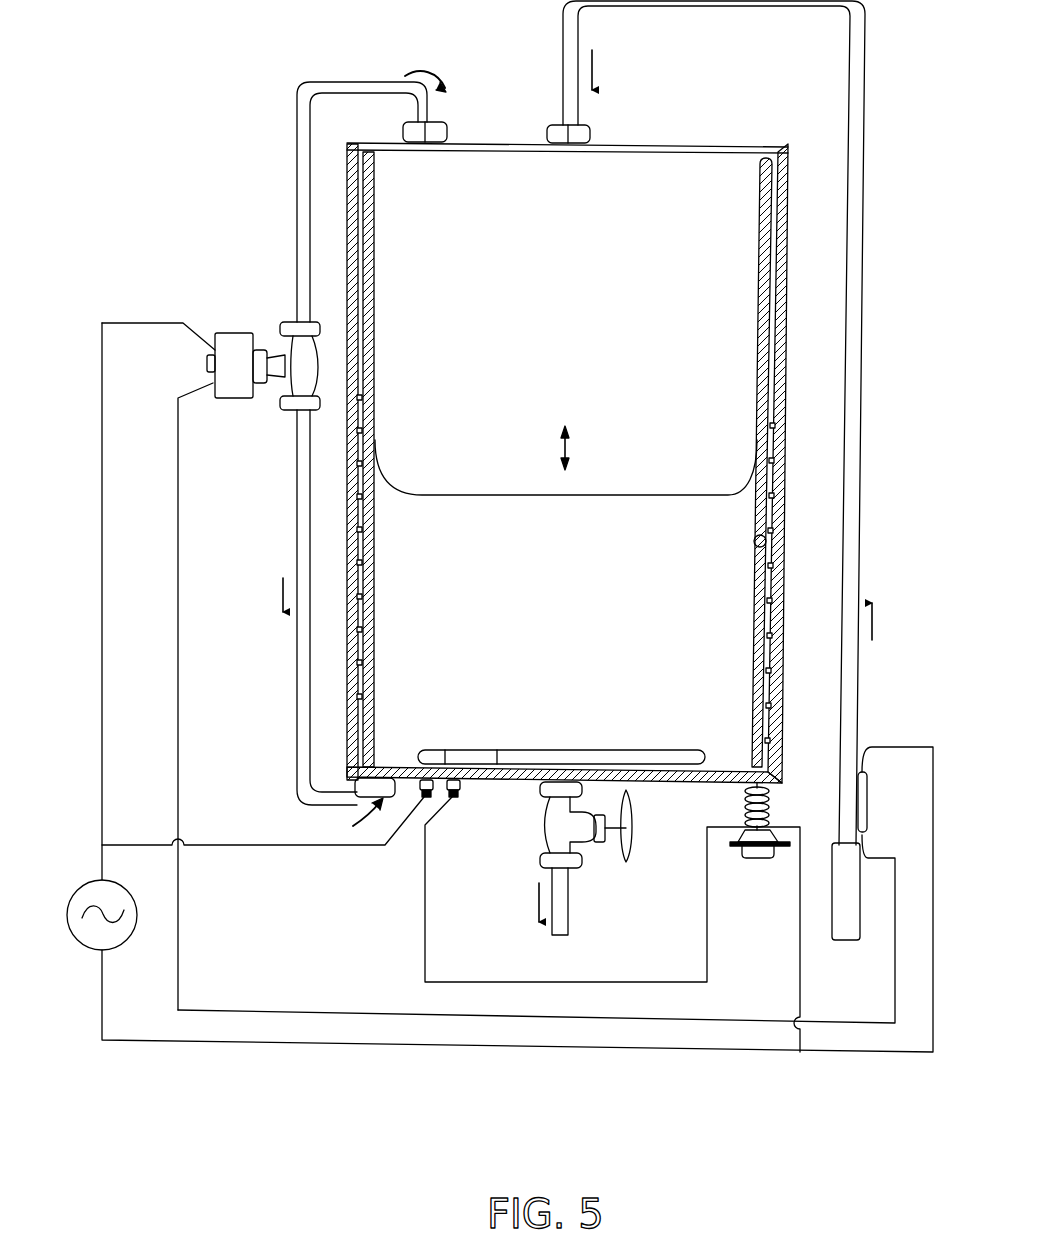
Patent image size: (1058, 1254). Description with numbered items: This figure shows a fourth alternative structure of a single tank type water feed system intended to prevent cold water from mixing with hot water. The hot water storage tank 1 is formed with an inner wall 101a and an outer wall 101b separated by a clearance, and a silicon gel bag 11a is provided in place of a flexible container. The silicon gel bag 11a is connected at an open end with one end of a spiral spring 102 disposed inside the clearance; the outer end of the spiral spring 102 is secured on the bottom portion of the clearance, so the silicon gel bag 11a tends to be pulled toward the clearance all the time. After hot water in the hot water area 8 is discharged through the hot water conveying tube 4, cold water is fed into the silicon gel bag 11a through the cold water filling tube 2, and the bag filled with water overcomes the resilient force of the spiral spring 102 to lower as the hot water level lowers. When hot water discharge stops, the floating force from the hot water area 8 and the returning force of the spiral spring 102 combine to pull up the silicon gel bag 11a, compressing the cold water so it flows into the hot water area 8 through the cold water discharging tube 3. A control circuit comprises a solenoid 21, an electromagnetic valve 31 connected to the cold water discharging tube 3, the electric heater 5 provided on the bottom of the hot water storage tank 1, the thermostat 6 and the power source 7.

The hot water storage tank 1 is at (672, 147).
The cold water filling tube 2 is at (866, 188).
The cold water discharging tube 3 is at (296, 158).
The electromagnetic valve 31 is at (235, 400).
The outer wall 101b is at (783, 440).
The silicon gel bag 11a is at (745, 495).
The inner wall 101a is at (770, 541).
The hot water area 8 is at (727, 600).
The spiral spring 102 is at (780, 690).
The electric heater 5 is at (620, 750).
The hot water conveying tube 4 is at (572, 872).
The thermostat 6 is at (758, 858).
The solenoid 21 is at (868, 790).
The power source 7 is at (82, 886).